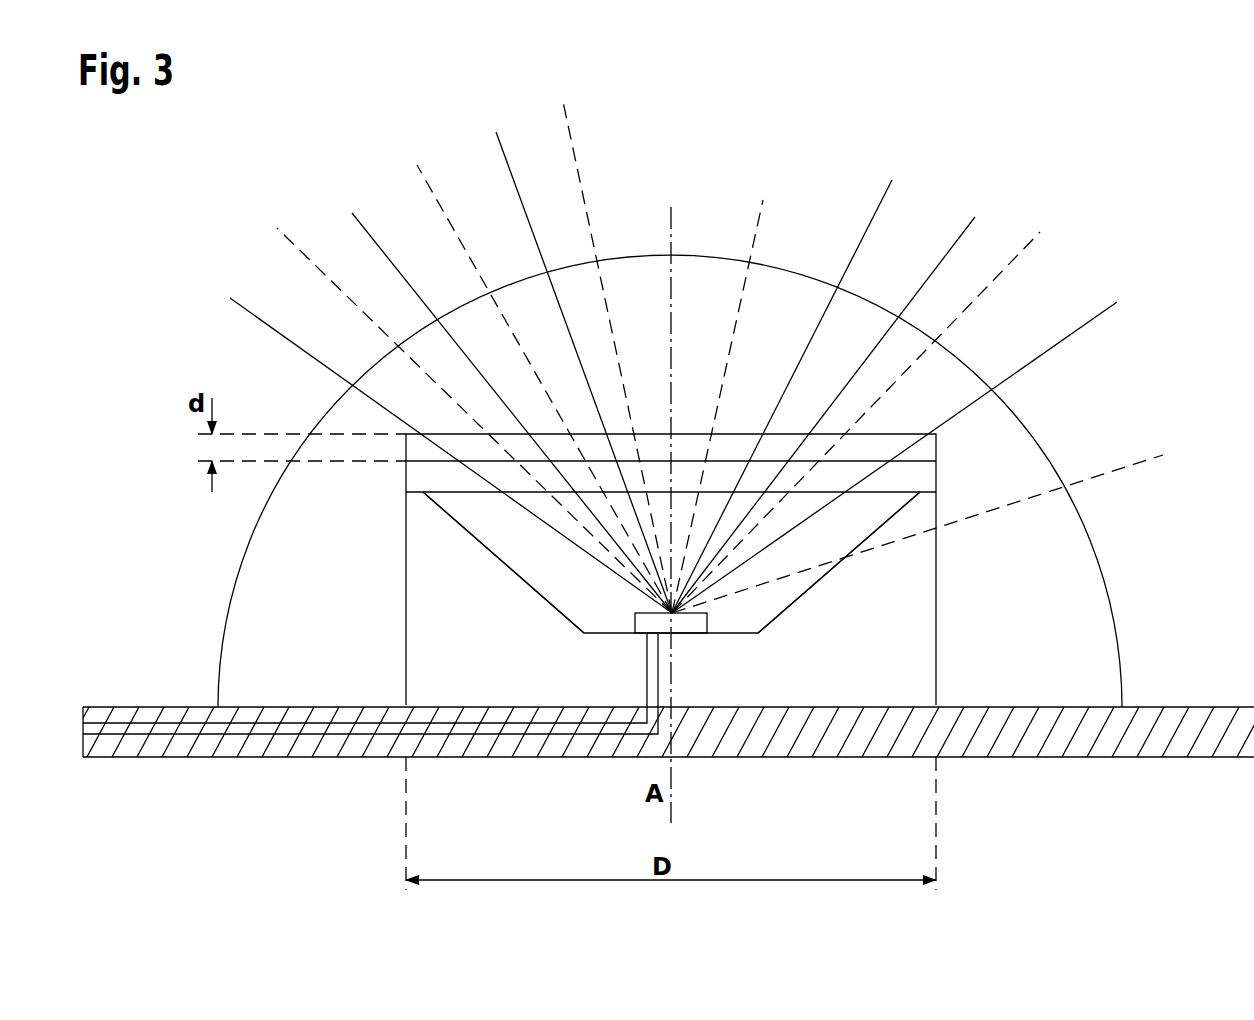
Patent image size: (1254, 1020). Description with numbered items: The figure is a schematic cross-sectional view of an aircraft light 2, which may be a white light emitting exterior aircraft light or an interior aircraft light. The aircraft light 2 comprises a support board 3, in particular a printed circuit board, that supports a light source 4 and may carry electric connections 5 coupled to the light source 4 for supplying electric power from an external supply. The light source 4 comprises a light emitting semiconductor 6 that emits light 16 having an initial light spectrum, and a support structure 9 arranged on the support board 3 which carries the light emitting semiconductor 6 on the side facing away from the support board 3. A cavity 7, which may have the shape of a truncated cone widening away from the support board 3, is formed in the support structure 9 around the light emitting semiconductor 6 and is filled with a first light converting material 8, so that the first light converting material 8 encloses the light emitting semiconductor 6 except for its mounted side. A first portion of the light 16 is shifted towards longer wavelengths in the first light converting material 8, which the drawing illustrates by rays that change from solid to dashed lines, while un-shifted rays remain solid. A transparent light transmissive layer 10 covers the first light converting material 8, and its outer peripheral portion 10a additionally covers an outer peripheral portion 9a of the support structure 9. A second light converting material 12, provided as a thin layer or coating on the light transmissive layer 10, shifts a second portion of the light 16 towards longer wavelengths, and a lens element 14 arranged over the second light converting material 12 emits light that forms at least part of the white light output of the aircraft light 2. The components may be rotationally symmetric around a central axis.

The aircraft light 2 is at (1033, 218).
The support board 3 is at (776, 741).
The light source 4 is at (377, 630).
The electric connections 5 is at (632, 675).
The light emitting semiconductor 6 is at (693, 627).
The cavity 7 is at (525, 602).
The first light converting material 8 is at (558, 603).
The support structure 9 is at (707, 695).
The outer peripheral portion of the support structure 9a is at (923, 513).
The light transmissive layer 10 is at (453, 477).
The outer peripheral portion of the light transmissive layer 10a is at (930, 478).
The second light converting material 12 is at (925, 448).
The lens element 14 is at (523, 302).
The light 16 is at (568, 546).